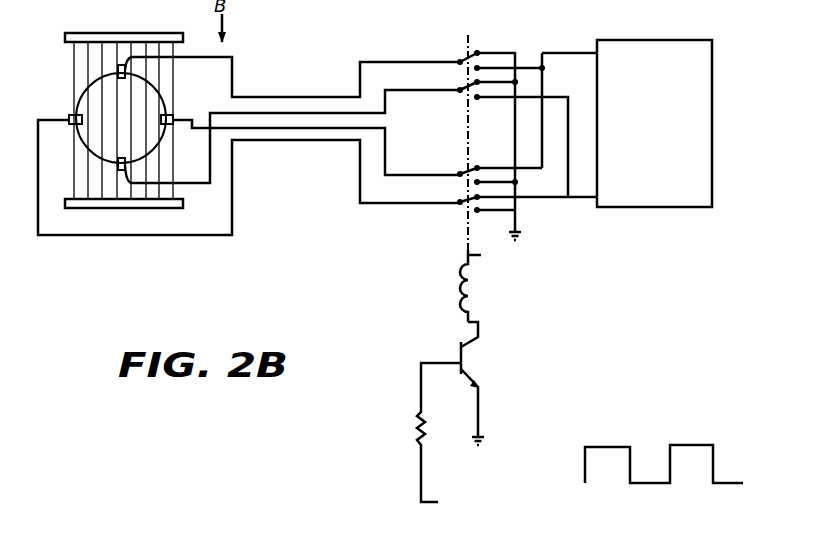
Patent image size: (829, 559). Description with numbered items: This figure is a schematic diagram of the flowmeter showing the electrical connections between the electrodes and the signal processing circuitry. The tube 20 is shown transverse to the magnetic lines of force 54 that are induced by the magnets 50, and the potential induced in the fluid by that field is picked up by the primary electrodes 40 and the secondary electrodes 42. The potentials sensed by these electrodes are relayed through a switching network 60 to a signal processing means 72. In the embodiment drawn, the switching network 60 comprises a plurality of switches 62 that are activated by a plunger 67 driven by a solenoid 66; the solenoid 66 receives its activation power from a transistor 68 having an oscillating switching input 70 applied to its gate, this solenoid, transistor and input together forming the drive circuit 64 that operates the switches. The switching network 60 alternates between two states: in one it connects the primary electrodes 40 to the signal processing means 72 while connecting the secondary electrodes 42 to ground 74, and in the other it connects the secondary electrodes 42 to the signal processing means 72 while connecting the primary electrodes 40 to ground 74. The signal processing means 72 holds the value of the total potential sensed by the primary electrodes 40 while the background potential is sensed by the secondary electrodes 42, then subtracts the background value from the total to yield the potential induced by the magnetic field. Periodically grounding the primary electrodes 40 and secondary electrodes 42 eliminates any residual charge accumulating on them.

The tube 20 is at (80, 145).
The primary electrodes 40 is at (72, 118).
The secondary electrodes 42 is at (118, 70).
The magnets 50 is at (127, 33).
The magnetic lines of force 54 is at (77, 93).
The switching network 60 is at (480, 38).
The switches 62 is at (462, 97).
The drive circuit 64 is at (589, 380).
The solenoid 66 is at (458, 290).
The plunger 67 is at (462, 240).
The transistor 68 is at (478, 343).
The oscillating switching input 70 is at (432, 502).
The signal processing means 72 is at (654, 123).
The ground 74 is at (520, 220).